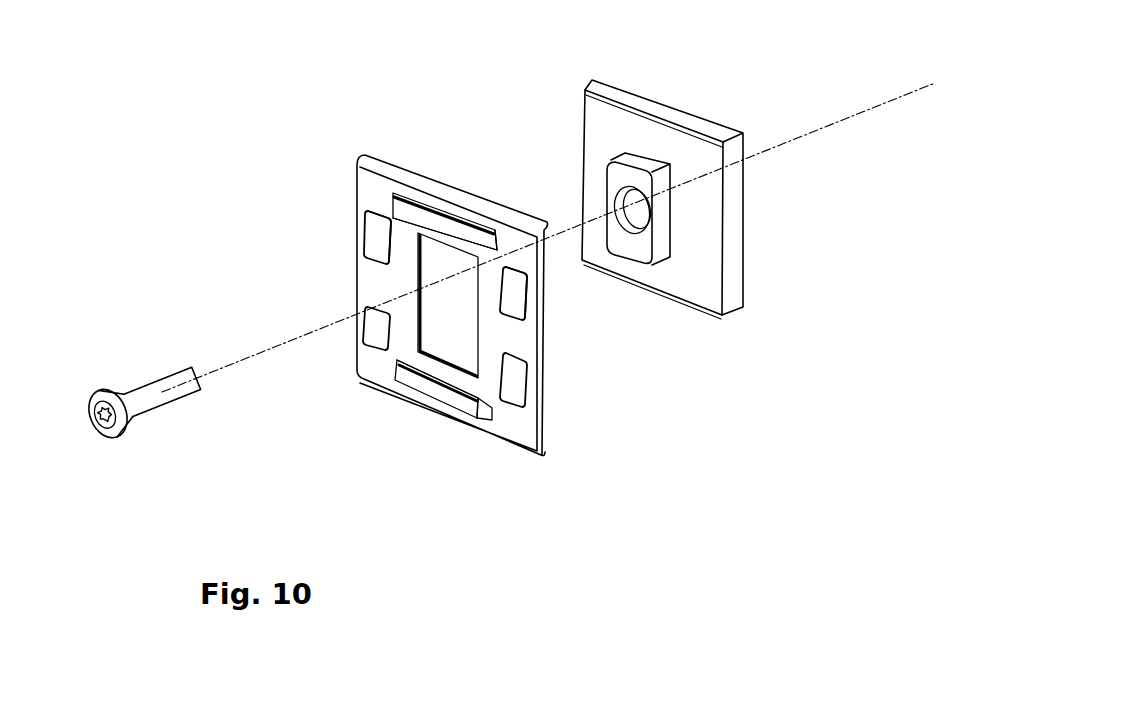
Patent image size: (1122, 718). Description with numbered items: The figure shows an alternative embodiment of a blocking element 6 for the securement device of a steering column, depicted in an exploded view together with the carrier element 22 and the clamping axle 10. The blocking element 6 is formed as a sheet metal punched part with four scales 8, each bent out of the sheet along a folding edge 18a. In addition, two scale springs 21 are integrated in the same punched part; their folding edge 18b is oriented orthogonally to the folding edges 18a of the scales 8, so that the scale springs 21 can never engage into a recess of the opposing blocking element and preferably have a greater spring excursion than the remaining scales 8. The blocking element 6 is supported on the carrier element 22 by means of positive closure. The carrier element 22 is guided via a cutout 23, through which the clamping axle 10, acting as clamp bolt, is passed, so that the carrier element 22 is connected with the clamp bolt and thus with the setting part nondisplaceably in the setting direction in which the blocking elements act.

The blocking element 6 is at (272, 102).
The scale 8 is at (373, 328).
The clamping axle 10 is at (142, 397).
The folding edge scale 18a is at (380, 215).
The folding edge scale spring 18b is at (495, 238).
The scale spring 21 is at (437, 220).
The carrier element 22 is at (703, 165).
The cutout 23 is at (638, 213).